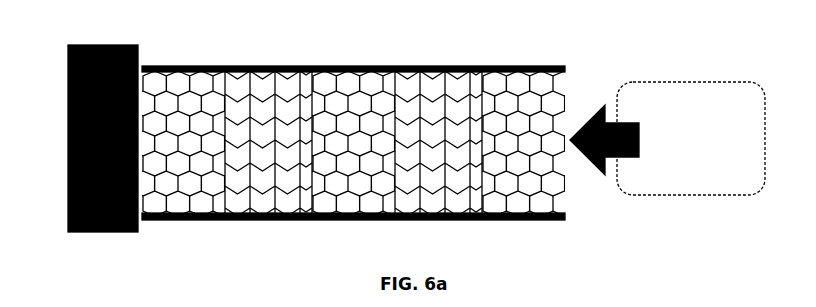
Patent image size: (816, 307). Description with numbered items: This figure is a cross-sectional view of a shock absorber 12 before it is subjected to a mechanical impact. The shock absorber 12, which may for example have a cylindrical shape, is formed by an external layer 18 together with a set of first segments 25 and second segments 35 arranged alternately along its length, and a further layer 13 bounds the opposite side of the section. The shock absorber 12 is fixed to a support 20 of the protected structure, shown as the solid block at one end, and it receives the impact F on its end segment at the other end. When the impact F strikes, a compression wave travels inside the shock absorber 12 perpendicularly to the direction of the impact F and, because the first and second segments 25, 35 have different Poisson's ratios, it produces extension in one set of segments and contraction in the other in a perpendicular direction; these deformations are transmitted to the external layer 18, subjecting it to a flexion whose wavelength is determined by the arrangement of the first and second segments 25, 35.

The shock absorber 12 is at (359, 135).
The bottom face sheet 13 is at (547, 205).
The external layer 18 is at (353, 66).
The support 20 is at (68, 147).
The first segments 25 is at (192, 198).
The second segments 35 is at (258, 198).
The impact F is at (667, 138).